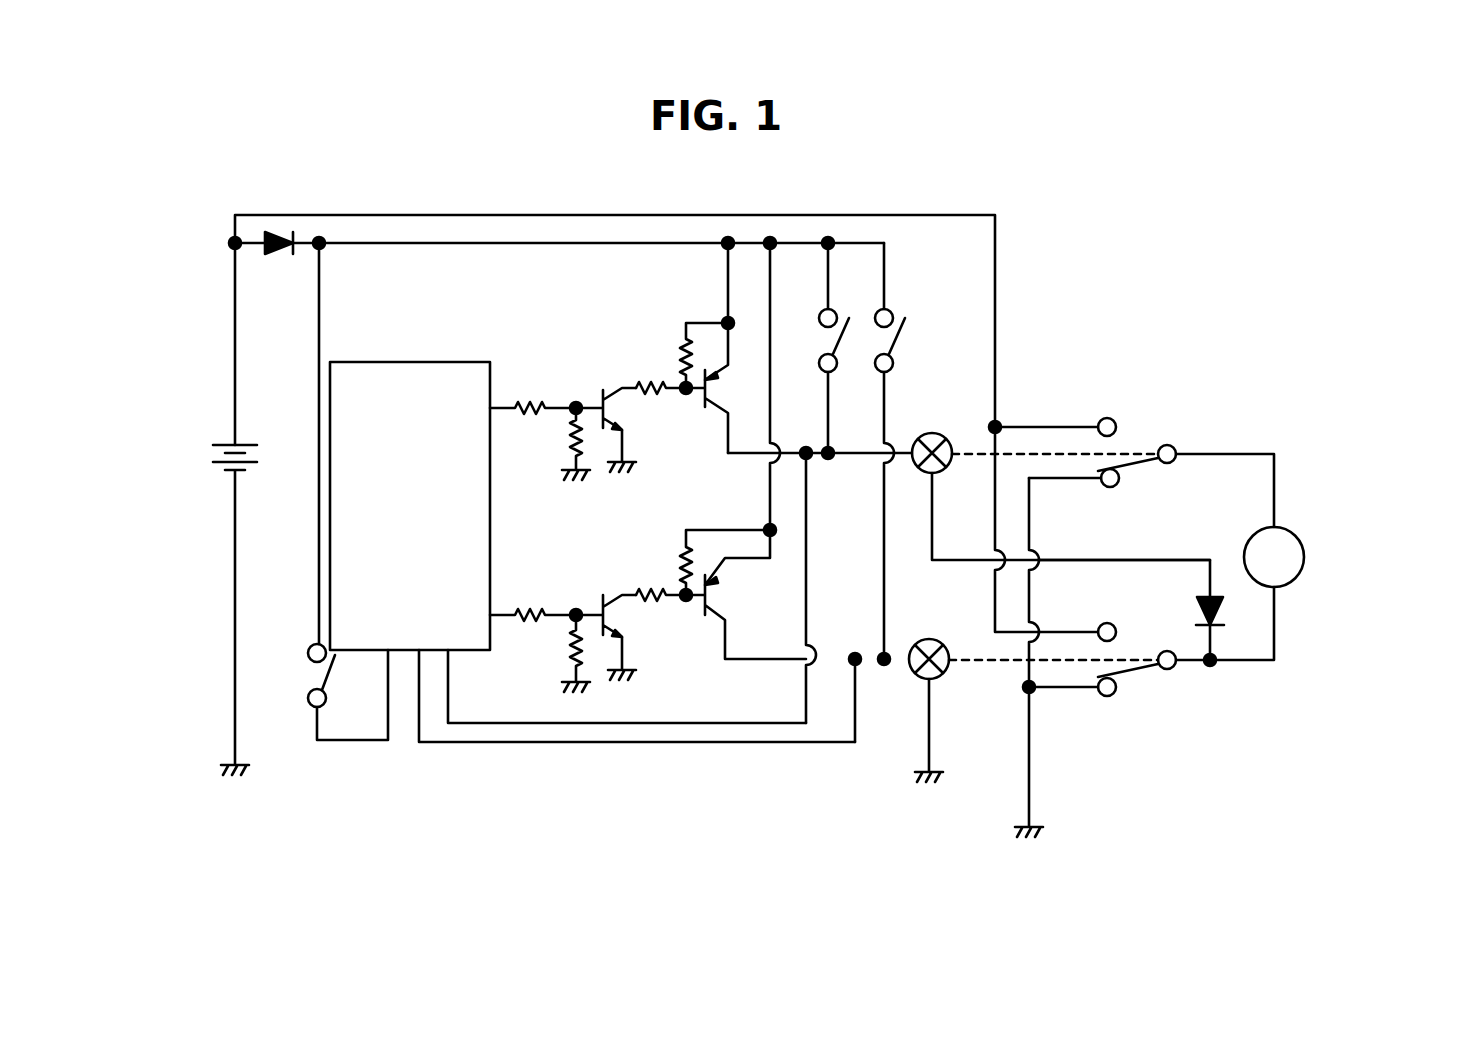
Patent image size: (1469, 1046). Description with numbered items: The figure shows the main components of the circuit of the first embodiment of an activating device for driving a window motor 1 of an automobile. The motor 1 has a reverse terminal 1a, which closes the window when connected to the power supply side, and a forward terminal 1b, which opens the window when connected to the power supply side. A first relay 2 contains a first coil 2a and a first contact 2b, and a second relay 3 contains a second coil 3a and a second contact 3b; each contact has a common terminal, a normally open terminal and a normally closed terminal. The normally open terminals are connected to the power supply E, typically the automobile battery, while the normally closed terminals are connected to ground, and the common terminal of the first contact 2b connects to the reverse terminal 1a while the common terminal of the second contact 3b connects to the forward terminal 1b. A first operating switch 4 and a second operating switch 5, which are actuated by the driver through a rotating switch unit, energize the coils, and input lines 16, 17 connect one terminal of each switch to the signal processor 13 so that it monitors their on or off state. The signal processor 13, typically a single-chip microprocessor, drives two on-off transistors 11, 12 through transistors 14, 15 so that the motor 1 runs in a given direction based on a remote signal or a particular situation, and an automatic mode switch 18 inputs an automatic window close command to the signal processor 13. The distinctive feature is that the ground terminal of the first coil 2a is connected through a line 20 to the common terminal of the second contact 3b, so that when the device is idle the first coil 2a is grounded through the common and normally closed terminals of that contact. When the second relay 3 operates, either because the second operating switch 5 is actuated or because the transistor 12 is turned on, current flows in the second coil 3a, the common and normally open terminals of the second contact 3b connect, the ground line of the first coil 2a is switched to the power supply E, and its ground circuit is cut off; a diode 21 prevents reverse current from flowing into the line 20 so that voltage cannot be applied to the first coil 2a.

The motor 1 is at (1304, 557).
The reverse terminal 1a is at (1274, 478).
The forward terminal 1b is at (1274, 628).
The first relay 2 is at (1068, 551).
The first coil 2a is at (928, 433).
The first contact 2b is at (1161, 388).
The second relay 3 is at (1042, 733).
The second coil 3a is at (925, 680).
The second contact 3b is at (1148, 677).
The first operating switch 4 is at (862, 186).
The second operating switch 5 is at (886, 309).
The transistor 11 is at (718, 376).
The transistor 12 is at (716, 575).
The signal processor 13 is at (428, 362).
The transistor 14 is at (617, 385).
The transistor 15 is at (617, 595).
The input line 16 is at (588, 723).
The input line 17 is at (652, 742).
The automatic mode switch 18 is at (310, 680).
The line 20 is at (1180, 561).
The diode 21 is at (1222, 603).
The power supply E is at (232, 445).